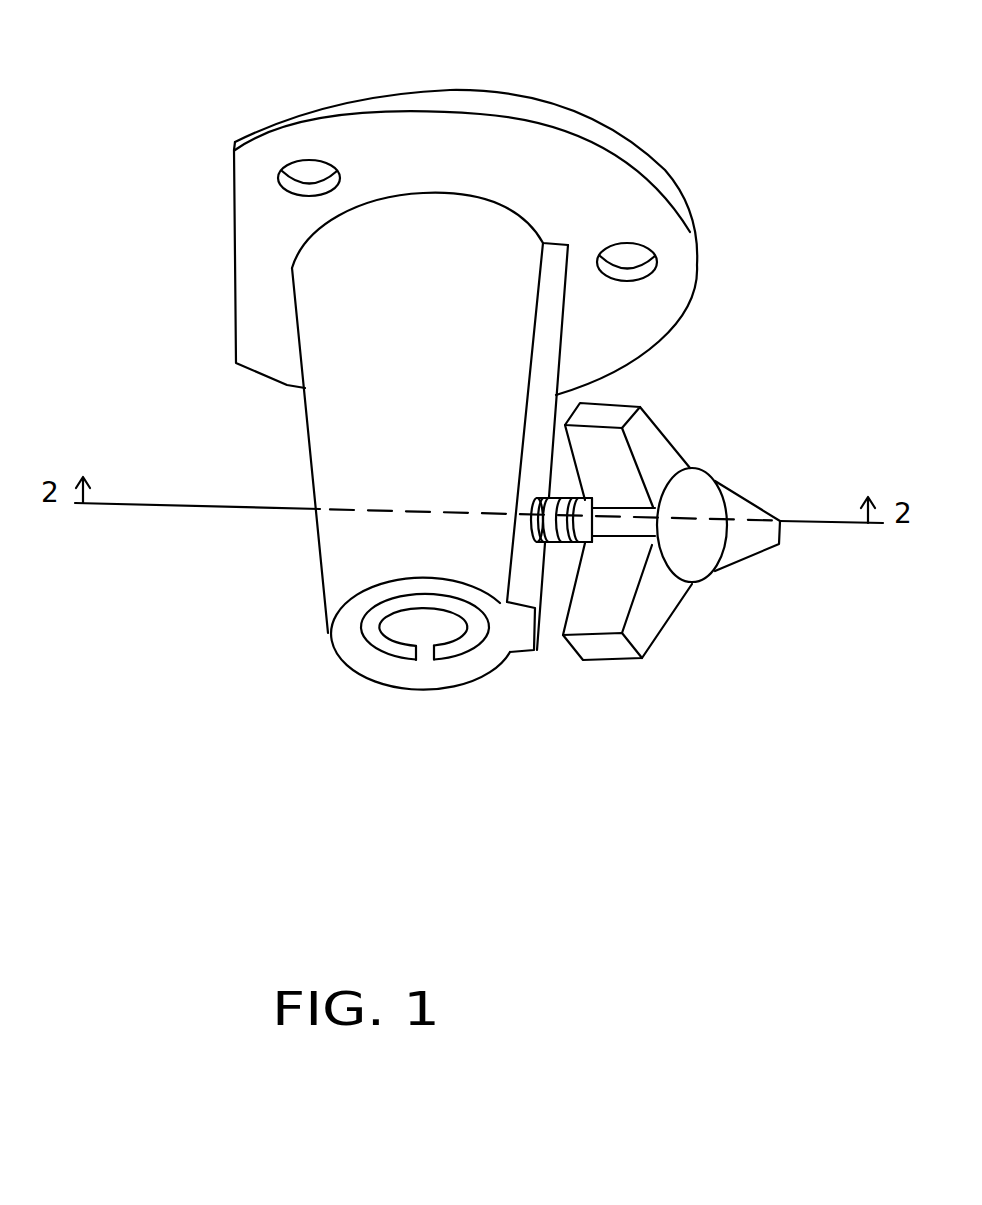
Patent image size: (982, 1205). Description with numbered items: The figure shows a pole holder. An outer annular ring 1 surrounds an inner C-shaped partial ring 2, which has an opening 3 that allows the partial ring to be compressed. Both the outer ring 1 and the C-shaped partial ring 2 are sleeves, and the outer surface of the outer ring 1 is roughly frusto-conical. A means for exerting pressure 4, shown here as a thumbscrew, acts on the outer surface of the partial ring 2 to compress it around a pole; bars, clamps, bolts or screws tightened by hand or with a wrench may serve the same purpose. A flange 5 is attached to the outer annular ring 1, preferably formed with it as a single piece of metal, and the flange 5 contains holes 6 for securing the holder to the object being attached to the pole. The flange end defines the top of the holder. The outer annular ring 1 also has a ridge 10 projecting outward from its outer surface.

The outer annular ring 1 is at (350, 542).
The inner C-shaped partial ring 2 is at (375, 632).
The opening 3 is at (425, 657).
The means for exerting pressure 4 is at (552, 535).
The flange 5 is at (267, 243).
The holes 6 is at (308, 172).
The ridge 10 is at (552, 283).